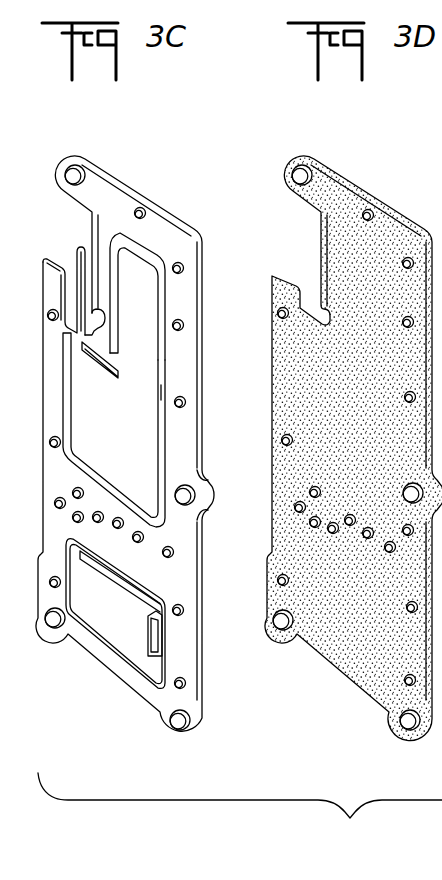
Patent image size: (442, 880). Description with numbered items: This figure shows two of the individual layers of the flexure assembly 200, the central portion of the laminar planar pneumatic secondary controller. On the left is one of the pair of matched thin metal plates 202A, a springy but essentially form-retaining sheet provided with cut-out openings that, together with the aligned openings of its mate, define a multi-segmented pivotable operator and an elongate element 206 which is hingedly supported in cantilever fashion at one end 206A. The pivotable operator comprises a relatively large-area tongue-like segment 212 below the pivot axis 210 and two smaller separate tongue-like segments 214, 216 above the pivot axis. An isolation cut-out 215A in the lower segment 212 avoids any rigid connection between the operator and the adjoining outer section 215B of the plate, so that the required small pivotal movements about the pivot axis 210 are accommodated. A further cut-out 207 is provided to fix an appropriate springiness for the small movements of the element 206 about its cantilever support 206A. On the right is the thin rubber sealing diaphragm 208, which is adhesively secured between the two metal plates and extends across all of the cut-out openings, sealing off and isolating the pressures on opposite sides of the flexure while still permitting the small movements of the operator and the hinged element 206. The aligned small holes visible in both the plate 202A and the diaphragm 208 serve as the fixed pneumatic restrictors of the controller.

In FIG. 3D, the flexure assembly 200 is at (366, 851).
In FIG. 3C, the metal plate 202A is at (123, 176).
In FIG. 3C, the elongate element 206 is at (112, 596).
In FIG. 3C, the cantilever support end 206A is at (163, 665).
In FIG. 3C, the cut-out 207 is at (147, 630).
In FIG. 3D, the rubber sealing diaphragm 208 is at (353, 177).
In FIG. 3C, the pivot axis 210 is at (163, 392).
In FIG. 3C, the tongue-like segment 212 is at (130, 440).
In FIG. 3C, the tongue-like segment 214 is at (77, 258).
In FIG. 3C, the isolation cut-out 215A is at (98, 366).
In FIG. 3C, the outer section 215B is at (100, 253).
In FIG. 3C, the tongue-like segment 216 is at (150, 312).